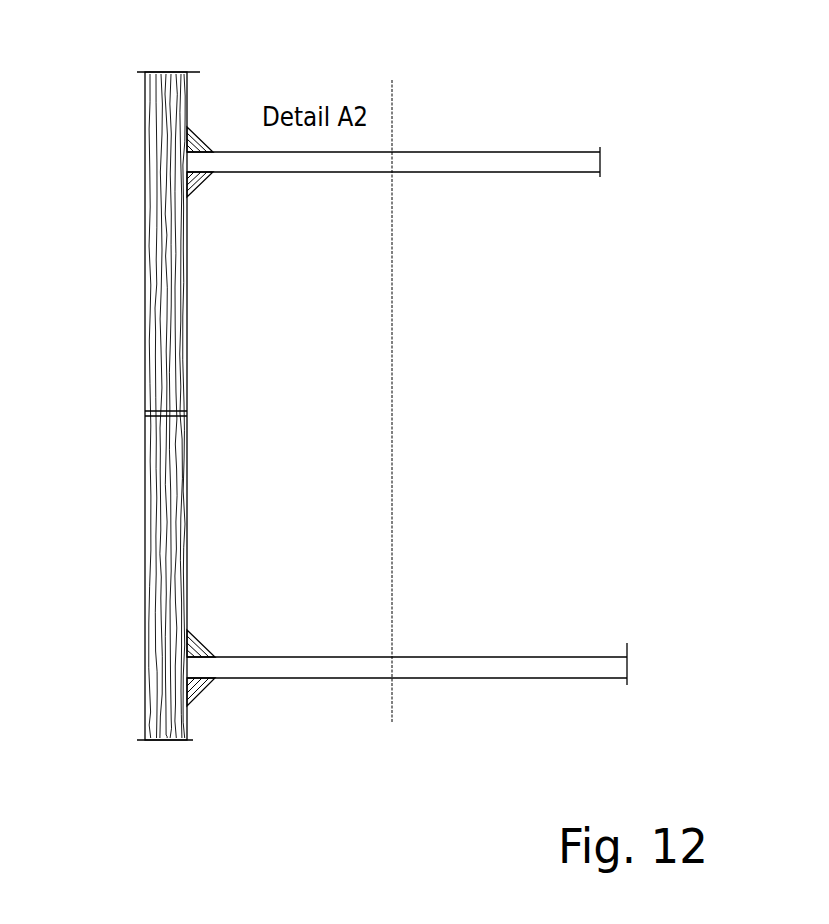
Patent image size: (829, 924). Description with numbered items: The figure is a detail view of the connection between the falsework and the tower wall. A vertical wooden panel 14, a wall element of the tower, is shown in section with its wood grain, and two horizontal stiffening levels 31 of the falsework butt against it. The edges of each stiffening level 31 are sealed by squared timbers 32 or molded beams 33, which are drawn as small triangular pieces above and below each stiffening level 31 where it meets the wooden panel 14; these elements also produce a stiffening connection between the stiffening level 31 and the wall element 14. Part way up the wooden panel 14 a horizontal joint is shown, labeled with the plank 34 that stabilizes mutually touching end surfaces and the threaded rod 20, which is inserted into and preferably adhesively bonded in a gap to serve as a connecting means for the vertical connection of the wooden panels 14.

The wooden panel 14 is at (165, 597).
The stiffening level 31 is at (490, 172).
The squared timber 32 is at (252, 383).
The molded beam 33 is at (195, 148).
The plank 34 is at (232, 399).
The threaded rod 20 is at (187, 414).